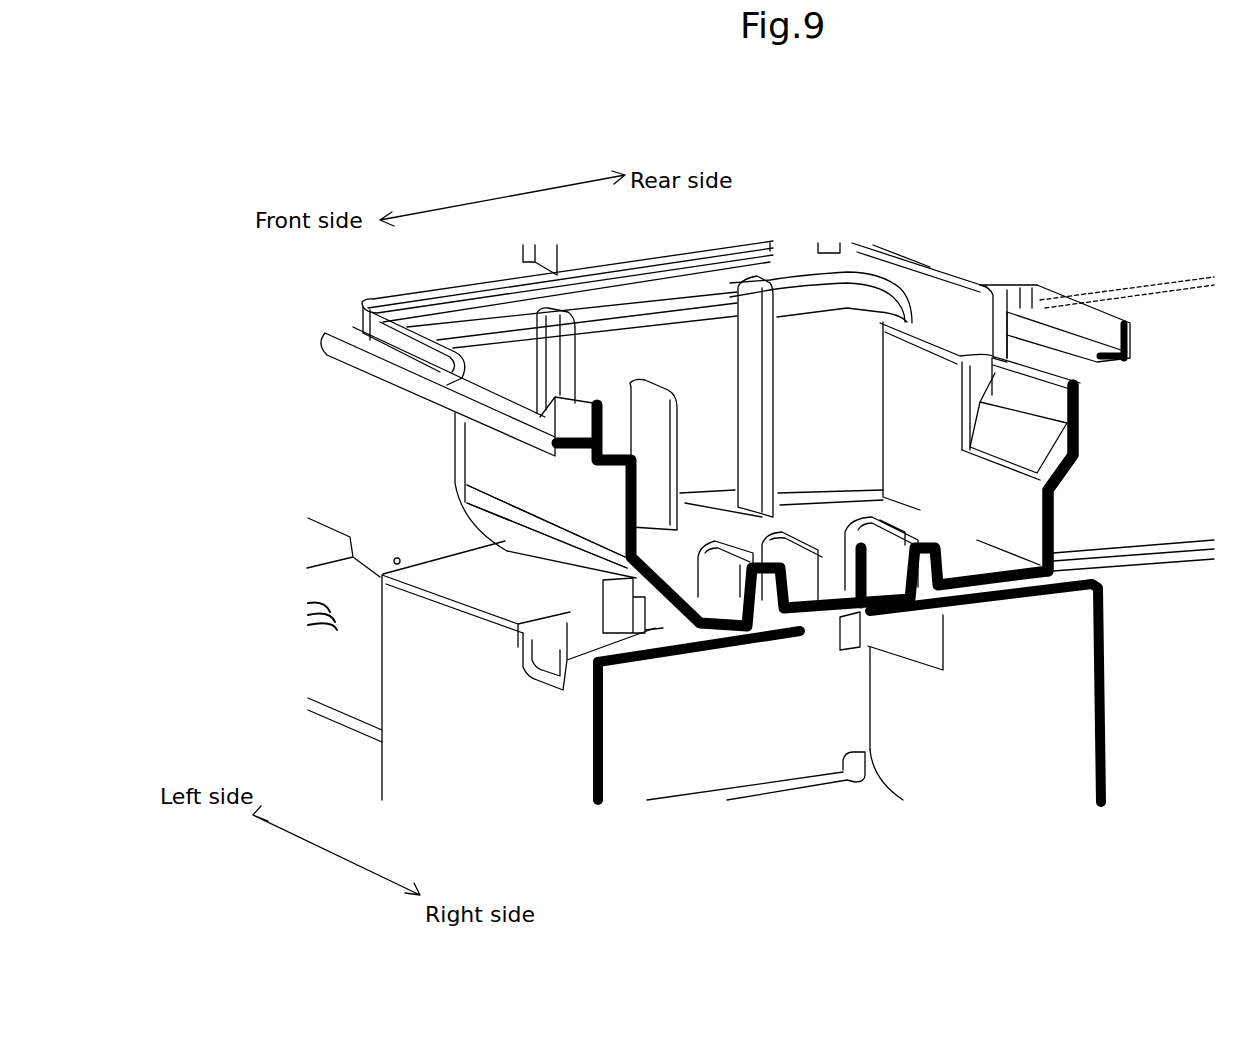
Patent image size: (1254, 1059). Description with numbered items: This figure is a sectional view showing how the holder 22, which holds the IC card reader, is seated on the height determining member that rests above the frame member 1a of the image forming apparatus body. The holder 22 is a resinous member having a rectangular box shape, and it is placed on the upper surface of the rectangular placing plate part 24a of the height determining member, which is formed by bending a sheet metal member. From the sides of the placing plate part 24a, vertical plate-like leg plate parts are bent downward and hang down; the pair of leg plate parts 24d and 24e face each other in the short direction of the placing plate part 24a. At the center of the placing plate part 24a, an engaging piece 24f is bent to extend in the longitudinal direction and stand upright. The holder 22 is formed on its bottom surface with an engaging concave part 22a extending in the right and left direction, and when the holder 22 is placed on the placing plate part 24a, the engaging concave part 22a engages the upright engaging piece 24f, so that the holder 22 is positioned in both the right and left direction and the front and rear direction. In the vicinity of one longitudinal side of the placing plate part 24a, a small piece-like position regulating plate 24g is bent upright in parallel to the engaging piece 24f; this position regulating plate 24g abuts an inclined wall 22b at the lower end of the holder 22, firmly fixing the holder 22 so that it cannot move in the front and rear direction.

The holder 22 is at (807, 275).
The engaging concave part 22a is at (940, 574).
The inclined wall 22b is at (540, 550).
The frame member 1a is at (353, 620).
The placing plate part 24a is at (460, 572).
The leg plate part 24d is at (1109, 711).
The leg plate part 24e is at (572, 745).
The engaging piece 24f is at (913, 568).
The position regulating plate 24g is at (620, 604).